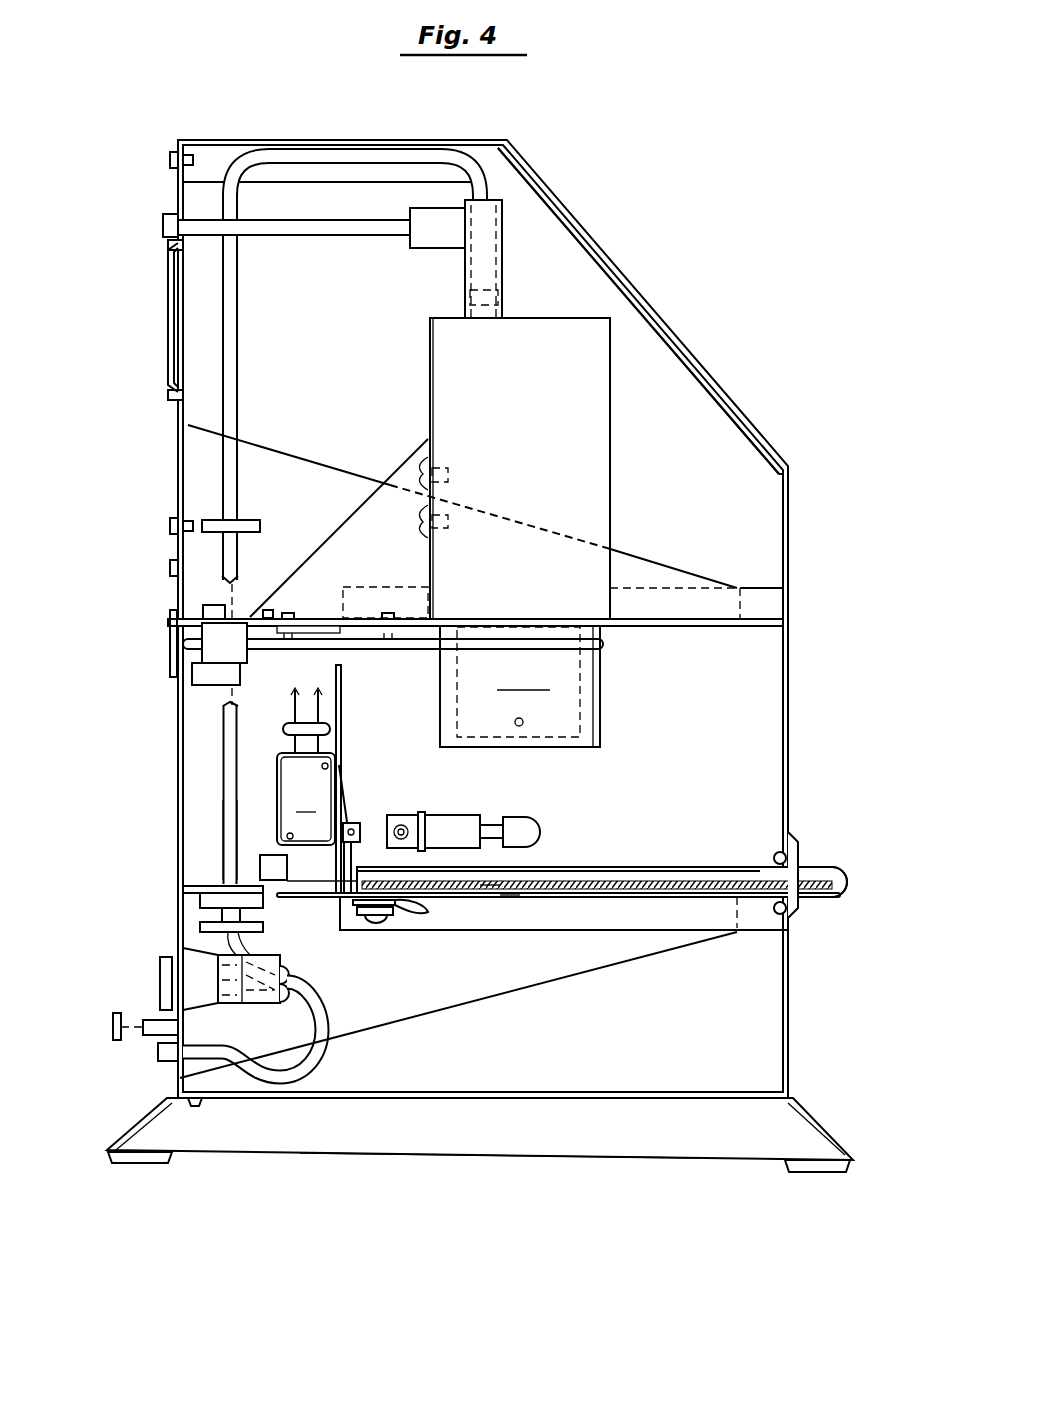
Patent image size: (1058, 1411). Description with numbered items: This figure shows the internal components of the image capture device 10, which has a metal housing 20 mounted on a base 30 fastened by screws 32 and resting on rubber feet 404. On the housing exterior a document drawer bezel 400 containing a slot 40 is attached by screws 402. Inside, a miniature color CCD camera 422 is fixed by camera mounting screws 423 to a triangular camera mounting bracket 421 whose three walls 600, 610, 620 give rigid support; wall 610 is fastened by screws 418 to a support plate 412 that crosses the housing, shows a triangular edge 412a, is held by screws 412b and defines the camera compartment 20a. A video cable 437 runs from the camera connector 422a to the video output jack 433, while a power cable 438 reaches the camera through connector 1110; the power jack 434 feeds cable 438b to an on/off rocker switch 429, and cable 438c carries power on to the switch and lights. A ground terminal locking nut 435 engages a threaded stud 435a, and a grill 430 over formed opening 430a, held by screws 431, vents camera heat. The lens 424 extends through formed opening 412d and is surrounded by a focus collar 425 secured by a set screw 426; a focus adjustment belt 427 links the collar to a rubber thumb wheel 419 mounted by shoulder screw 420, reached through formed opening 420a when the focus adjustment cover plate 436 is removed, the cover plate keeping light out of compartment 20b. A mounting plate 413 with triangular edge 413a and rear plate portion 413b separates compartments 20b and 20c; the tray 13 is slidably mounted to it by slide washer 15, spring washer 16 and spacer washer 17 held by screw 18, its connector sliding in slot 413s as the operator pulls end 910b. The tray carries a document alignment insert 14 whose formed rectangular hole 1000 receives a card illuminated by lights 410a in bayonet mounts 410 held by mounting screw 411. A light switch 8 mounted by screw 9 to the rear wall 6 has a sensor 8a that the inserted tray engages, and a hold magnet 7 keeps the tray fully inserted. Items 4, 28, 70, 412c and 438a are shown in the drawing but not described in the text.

The apparatus base assembly 4 is at (475, 1160).
The rear wall 6 is at (342, 710).
The document drawer hold magnet 7 is at (285, 871).
The document drawer-actuated light switch 8 is at (306, 799).
The sensor 8a is at (352, 821).
The screw 9 is at (342, 758).
The image capture device 10 is at (477, 686).
The tray 13 is at (850, 893).
The document alignment insert 14 is at (652, 868).
The slide washer 15 is at (427, 912).
The spring washer 16 is at (355, 903).
The spacer washer 17 is at (380, 924).
The screw 18 is at (172, 159).
The housing 20 is at (790, 575).
The compartment 20a is at (633, 403).
The compartment 20b is at (715, 730).
The compartment 20c is at (705, 1012).
The tube 28 is at (226, 838).
The base 30 is at (822, 1104).
The screws 32 is at (196, 1106).
The slot 40 is at (806, 906).
The tray liner 70 is at (494, 884).
The document drawer bezel 400 is at (795, 845).
The screws 402 is at (778, 858).
The rubber feet 404 is at (146, 1165).
The light bulb bayonet mounts 410 is at (452, 828).
The light 410a is at (541, 832).
The mounting screw 411 is at (399, 815).
The support plate 412 is at (190, 888).
The edge 412a is at (648, 562).
The screws 412b is at (205, 523).
The plate fastener 412c is at (178, 568).
The formed opening 412d is at (524, 618).
The mounting plate 413 is at (205, 900).
The triangular edge 413a is at (508, 1000).
The rear plate portion 413b is at (205, 931).
The slot 413s is at (500, 894).
The screws 418 is at (291, 612).
The rubber thumb wheel 419 is at (205, 630).
The shoulder screw 420 is at (232, 700).
The formed opening 420a is at (205, 672).
The camera mounting bracket 421 is at (347, 478).
The CCD camera 422 is at (612, 455).
The connector 422a is at (425, 249).
The camera mounting screws 423 is at (420, 512).
The lens 424 is at (518, 682).
The camera lens focus collar 425 is at (592, 750).
The set screw 426 is at (519, 727).
The camera focus adjustment belt 427 is at (420, 651).
The on/off rocker switch 429 is at (200, 985).
The vent or grill 430 is at (168, 313).
The formed opening 430a is at (170, 350).
The screws 431 is at (168, 246).
The video output jack 433 is at (163, 222).
The power jack 434 is at (164, 1062).
The ground terminal locking nut 435 is at (113, 1027).
The threaded stud 435a is at (150, 1036).
The focus adjustment cover plate 436 is at (185, 672).
The video cable 437 is at (340, 236).
The power cable 438 is at (238, 360).
The pipe lower portion 438a is at (224, 846).
The cable 438b is at (331, 1050).
The cable 438c is at (290, 735).
The wall 600 is at (410, 544).
The wall 610 is at (270, 611).
The wall 620 is at (432, 576).
The end 910b is at (848, 876).
The formed rectangular hole 1000 is at (533, 898).
The connector 1110 is at (494, 319).